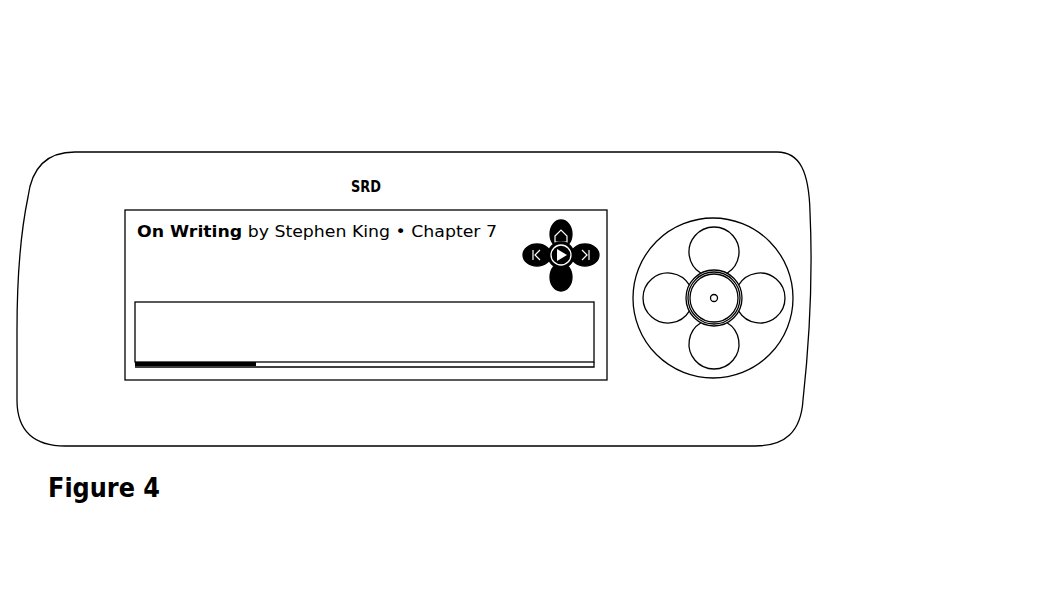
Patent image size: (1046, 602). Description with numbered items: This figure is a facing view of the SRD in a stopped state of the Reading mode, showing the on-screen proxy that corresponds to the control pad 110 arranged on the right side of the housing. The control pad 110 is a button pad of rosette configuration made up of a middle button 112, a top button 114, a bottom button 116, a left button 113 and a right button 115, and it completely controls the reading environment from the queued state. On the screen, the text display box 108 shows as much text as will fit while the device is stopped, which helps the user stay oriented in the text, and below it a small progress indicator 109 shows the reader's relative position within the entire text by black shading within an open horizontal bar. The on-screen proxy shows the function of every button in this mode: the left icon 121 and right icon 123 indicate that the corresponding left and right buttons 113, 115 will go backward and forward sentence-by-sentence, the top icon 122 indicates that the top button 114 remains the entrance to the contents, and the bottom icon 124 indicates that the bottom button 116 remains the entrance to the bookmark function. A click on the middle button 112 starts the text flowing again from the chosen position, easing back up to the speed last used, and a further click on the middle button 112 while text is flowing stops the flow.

The text display box 108 is at (436, 353).
The progress indicator 109 is at (255, 369).
The control pad 110 is at (765, 306).
The middle button 112 is at (727, 312).
The left button 113 is at (652, 313).
The top button 114 is at (717, 243).
The right button 115 is at (776, 283).
The bottom button 116 is at (714, 353).
The left icon 121 is at (527, 246).
The top icon 122 is at (562, 220).
The right icon 123 is at (597, 246).
The bottom icon 124 is at (561, 290).